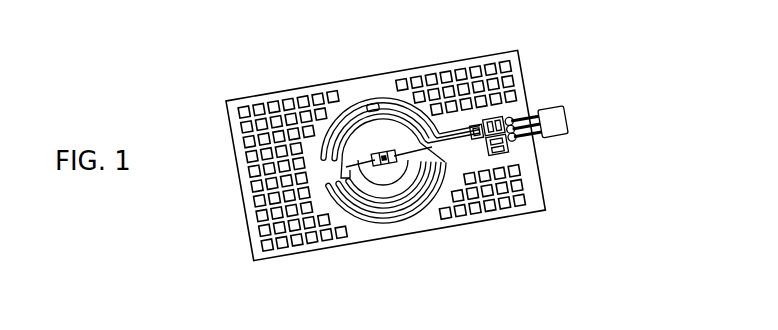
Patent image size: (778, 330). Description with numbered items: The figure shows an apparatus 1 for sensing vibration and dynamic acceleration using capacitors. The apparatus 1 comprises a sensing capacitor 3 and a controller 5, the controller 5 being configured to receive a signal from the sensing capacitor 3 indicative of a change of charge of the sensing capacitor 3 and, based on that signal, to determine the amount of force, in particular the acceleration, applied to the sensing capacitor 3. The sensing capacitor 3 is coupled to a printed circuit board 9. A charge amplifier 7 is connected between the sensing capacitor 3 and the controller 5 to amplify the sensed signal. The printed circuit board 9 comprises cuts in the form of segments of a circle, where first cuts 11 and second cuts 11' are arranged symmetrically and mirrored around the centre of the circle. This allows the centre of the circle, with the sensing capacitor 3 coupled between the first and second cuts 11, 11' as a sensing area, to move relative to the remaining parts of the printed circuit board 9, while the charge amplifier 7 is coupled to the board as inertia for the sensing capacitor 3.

The apparatus 1 is at (222, 110).
The sensing capacitor 3 is at (373, 104).
The controller 5 is at (545, 108).
The charge amplifier 7 is at (384, 165).
The printed circuit board 9 is at (318, 99).
The first cuts 11 is at (400, 110).
The second cuts 11' is at (391, 155).